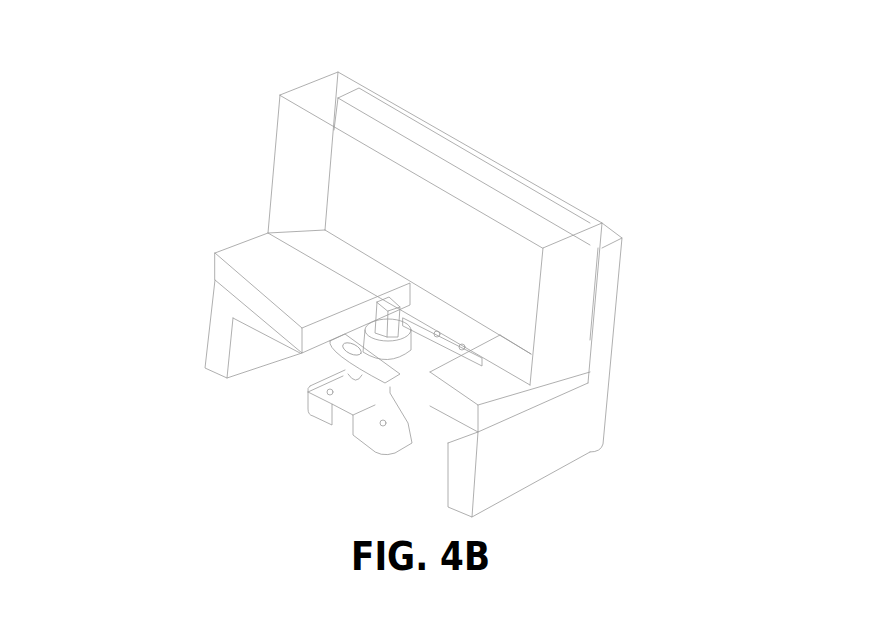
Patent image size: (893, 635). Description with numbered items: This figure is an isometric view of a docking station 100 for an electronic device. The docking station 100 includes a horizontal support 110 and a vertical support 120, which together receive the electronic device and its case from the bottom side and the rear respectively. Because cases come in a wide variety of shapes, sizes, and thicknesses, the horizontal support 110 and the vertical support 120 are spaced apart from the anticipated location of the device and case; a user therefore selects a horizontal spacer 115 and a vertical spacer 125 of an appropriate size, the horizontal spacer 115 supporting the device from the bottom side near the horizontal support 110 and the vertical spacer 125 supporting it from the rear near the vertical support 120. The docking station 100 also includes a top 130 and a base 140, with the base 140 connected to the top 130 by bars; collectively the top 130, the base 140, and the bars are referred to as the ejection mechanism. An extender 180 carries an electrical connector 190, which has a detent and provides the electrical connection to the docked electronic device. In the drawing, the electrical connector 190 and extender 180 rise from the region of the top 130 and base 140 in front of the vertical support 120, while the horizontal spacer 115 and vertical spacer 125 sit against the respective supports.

The docking station 100 is at (110, 95).
The horizontal support 110 is at (537, 407).
The horizontal spacer 115 is at (555, 373).
The vertical support 120 is at (598, 296).
The vertical spacer 125 is at (538, 306).
The top 130 is at (330, 355).
The base 140 is at (367, 443).
The extender 180 is at (375, 351).
The electrical connector 190 is at (387, 325).